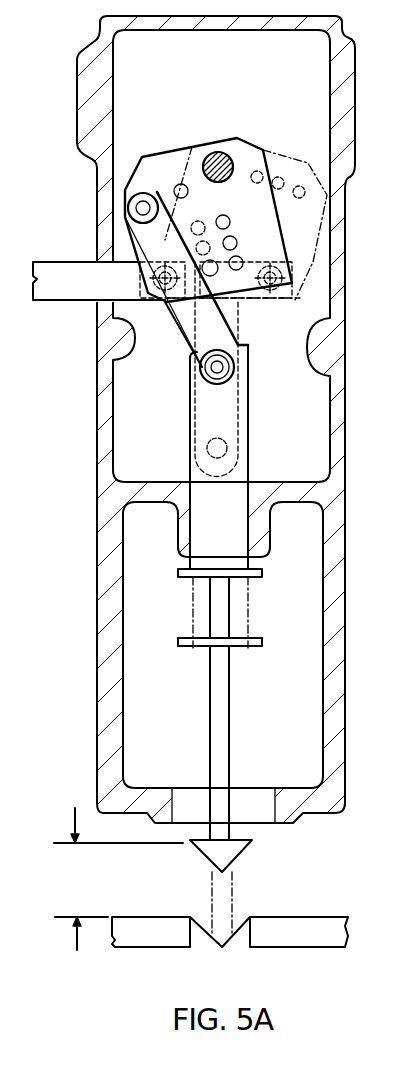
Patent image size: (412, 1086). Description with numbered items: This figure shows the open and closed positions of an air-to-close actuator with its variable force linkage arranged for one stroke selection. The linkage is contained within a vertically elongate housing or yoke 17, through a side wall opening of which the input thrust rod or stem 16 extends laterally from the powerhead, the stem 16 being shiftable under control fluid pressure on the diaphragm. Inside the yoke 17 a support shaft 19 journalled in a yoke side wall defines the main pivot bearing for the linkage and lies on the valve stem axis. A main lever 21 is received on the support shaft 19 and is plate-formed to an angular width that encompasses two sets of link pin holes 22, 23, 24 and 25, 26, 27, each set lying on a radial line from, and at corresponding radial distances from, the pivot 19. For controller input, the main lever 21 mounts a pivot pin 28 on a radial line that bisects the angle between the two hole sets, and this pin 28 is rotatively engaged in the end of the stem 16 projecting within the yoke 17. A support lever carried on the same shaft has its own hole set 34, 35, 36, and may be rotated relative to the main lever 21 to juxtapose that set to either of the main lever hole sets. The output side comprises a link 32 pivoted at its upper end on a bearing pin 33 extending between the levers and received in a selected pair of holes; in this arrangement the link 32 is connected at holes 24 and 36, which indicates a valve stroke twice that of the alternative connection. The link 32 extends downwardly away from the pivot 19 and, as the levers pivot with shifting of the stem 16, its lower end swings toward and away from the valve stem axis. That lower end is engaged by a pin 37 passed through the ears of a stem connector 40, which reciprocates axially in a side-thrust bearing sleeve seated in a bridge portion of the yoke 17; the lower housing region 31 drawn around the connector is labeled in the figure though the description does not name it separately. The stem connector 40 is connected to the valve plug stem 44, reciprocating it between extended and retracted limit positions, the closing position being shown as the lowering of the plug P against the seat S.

The input thrust rod or stem 16 is at (70, 297).
The housing or yoke 17 is at (340, 18).
The support shaft 19 is at (215, 152).
The main lever 21 is at (226, 147).
The link pin hole 22 is at (181, 184).
The link pin hole 23 is at (157, 190).
The link pin hole 24 is at (143, 205).
The link pin hole 25 is at (230, 218).
The link pin hole 26 is at (236, 240).
The link pin hole 27 is at (242, 261).
The pivot pin 28 is at (165, 305).
The lower housing chamber 31 is at (105, 688).
The link 32 is at (188, 328).
The bearing pin 33 is at (136, 211).
The hole of support lever 34 is at (199, 226).
The hole of support lever 35 is at (205, 224).
The hole of support lever 36 is at (240, 300).
The pin 37 is at (220, 367).
The stem connector 40 is at (245, 432).
The valve plug stem 44 is at (228, 707).
The plug P is at (243, 852).
The seat S is at (160, 948).